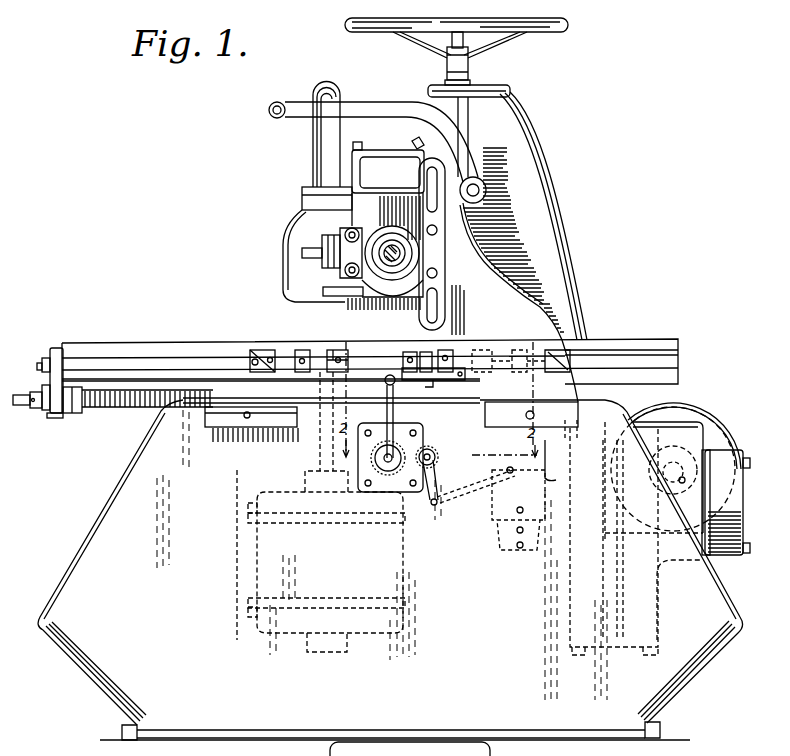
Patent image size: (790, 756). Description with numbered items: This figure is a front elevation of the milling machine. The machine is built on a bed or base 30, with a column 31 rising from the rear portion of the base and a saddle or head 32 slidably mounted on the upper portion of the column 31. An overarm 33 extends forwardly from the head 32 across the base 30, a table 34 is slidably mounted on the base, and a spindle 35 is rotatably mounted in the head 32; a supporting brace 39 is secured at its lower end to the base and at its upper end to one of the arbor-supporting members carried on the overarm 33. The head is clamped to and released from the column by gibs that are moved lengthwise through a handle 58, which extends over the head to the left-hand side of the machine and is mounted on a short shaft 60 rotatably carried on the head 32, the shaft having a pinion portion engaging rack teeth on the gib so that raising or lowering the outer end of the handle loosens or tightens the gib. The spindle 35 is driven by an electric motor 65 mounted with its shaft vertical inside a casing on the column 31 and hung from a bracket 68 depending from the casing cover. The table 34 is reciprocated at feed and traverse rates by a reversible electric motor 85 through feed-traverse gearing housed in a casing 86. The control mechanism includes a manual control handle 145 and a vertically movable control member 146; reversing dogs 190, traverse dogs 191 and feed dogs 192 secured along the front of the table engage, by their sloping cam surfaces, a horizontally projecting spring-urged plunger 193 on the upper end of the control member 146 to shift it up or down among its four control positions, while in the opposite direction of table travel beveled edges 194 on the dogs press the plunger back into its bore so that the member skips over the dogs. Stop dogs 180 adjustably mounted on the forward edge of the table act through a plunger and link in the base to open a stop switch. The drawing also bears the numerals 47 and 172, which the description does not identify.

The bed or base 30 is at (122, 494).
The column 31 is at (562, 248).
The saddle or head 32 is at (373, 202).
The overarm 33 is at (380, 165).
The table 34 is at (625, 337).
The spindle 35 is at (338, 266).
The supporting brace 39 is at (527, 317).
The handwheel 47 is at (557, 30).
The handle 58 is at (366, 107).
The short shaft 60 is at (486, 184).
The electric motor 65 is at (392, 572).
The bracket 68 is at (234, 567).
The reversible electric motor 85 is at (695, 442).
The casing 86 is at (570, 585).
The manual control handle 145 is at (392, 418).
The vertically movable member 146 is at (418, 416).
The base plate 172 is at (216, 748).
The stop dogs 180 is at (374, 342).
The reversing dogs 190 is at (260, 350).
The traverse dogs 191 is at (338, 348).
The feed dogs 192 is at (301, 350).
The horizontal plunger 193 is at (558, 372).
The beveled edges 194 is at (251, 358).